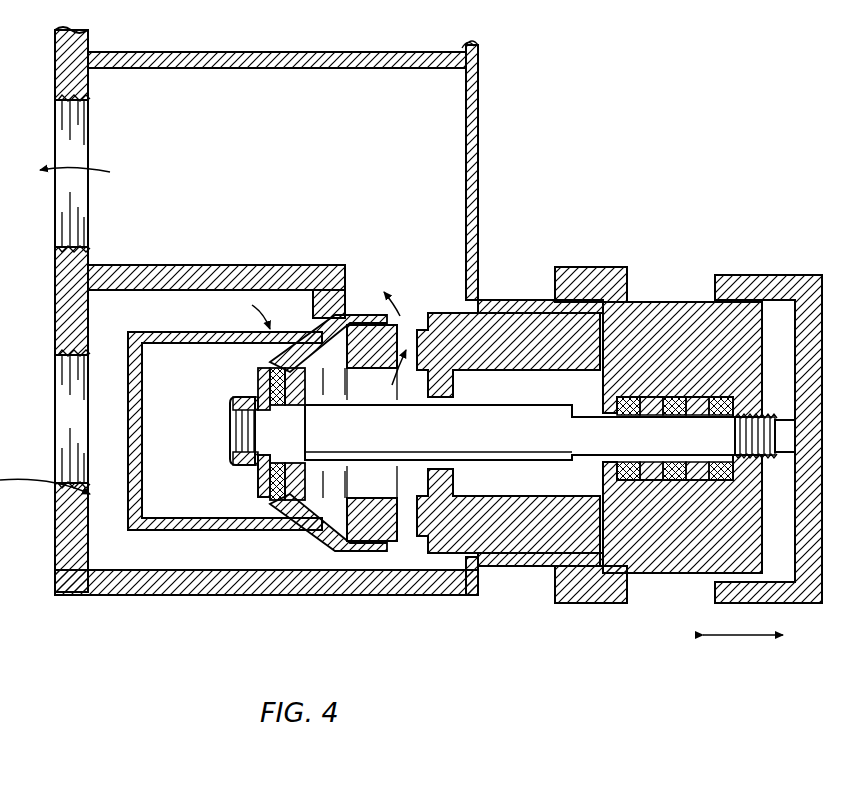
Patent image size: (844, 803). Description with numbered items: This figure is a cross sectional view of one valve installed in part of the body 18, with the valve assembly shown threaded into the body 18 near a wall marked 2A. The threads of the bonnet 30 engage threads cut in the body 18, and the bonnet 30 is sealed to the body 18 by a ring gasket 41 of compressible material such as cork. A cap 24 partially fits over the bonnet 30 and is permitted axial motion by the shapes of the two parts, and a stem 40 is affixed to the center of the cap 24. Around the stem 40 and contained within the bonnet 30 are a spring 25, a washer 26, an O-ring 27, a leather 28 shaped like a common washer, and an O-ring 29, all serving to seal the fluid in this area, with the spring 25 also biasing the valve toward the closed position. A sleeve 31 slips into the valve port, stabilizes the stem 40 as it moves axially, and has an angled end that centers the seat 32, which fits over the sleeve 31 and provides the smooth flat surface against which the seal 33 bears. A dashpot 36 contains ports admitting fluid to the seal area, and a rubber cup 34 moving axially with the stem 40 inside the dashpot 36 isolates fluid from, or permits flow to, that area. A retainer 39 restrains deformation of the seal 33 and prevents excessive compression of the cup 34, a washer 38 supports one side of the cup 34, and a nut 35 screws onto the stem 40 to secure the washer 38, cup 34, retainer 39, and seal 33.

The wall 2A is at (60, 238).
The body 18 is at (125, 592).
The cap 24 is at (780, 274).
The spring 25 is at (690, 397).
The washer 26 is at (672, 397).
The O-ring 27 is at (660, 397).
The leather 28 is at (642, 397).
The O-ring 29 is at (623, 397).
The bonnet 30 is at (566, 268).
The sleeve 31 is at (510, 300).
The seat 32 is at (376, 320).
The seal 33 is at (310, 360).
The cup 34 is at (296, 390).
The nut 35 is at (244, 397).
The dashpot 36 is at (188, 331).
The washer 38 is at (263, 460).
The retainer 39 is at (281, 482).
The stem 40 is at (392, 456).
The ring gasket 41 is at (598, 574).